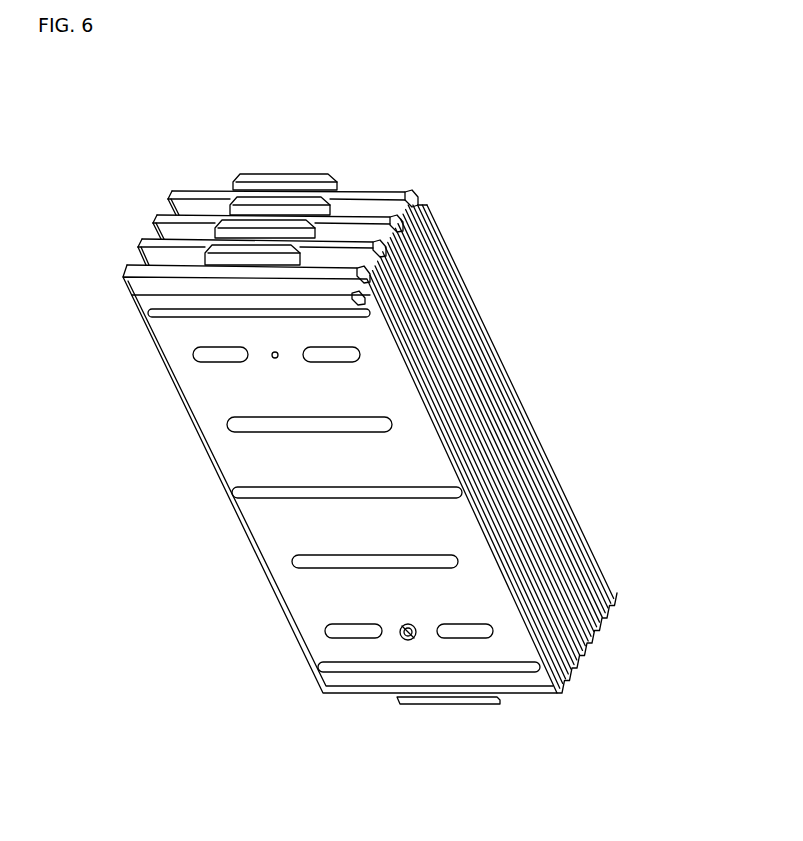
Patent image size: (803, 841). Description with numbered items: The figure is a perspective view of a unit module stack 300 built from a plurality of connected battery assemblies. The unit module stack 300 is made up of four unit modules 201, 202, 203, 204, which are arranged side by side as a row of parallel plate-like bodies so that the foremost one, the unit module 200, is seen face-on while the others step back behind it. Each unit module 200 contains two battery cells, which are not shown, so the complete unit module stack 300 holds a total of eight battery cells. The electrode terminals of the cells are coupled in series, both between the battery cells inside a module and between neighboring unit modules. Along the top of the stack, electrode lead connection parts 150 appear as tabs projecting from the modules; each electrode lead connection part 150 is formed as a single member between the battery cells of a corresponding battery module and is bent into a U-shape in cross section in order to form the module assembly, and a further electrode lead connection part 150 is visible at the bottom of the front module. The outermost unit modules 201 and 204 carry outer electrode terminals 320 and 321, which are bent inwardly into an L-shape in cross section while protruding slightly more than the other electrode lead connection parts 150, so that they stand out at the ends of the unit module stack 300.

The unit module stack 300 is at (116, 112).
The unit module 200 is at (277, 547).
The unit module 201 is at (568, 677).
The unit module 202 is at (585, 655).
The unit module 203 is at (600, 630).
The unit module 204 is at (615, 600).
The electrode lead connection part 150 is at (240, 242).
The outer electrode terminal 320 is at (213, 267).
The outer electrode terminal 321 is at (313, 182).